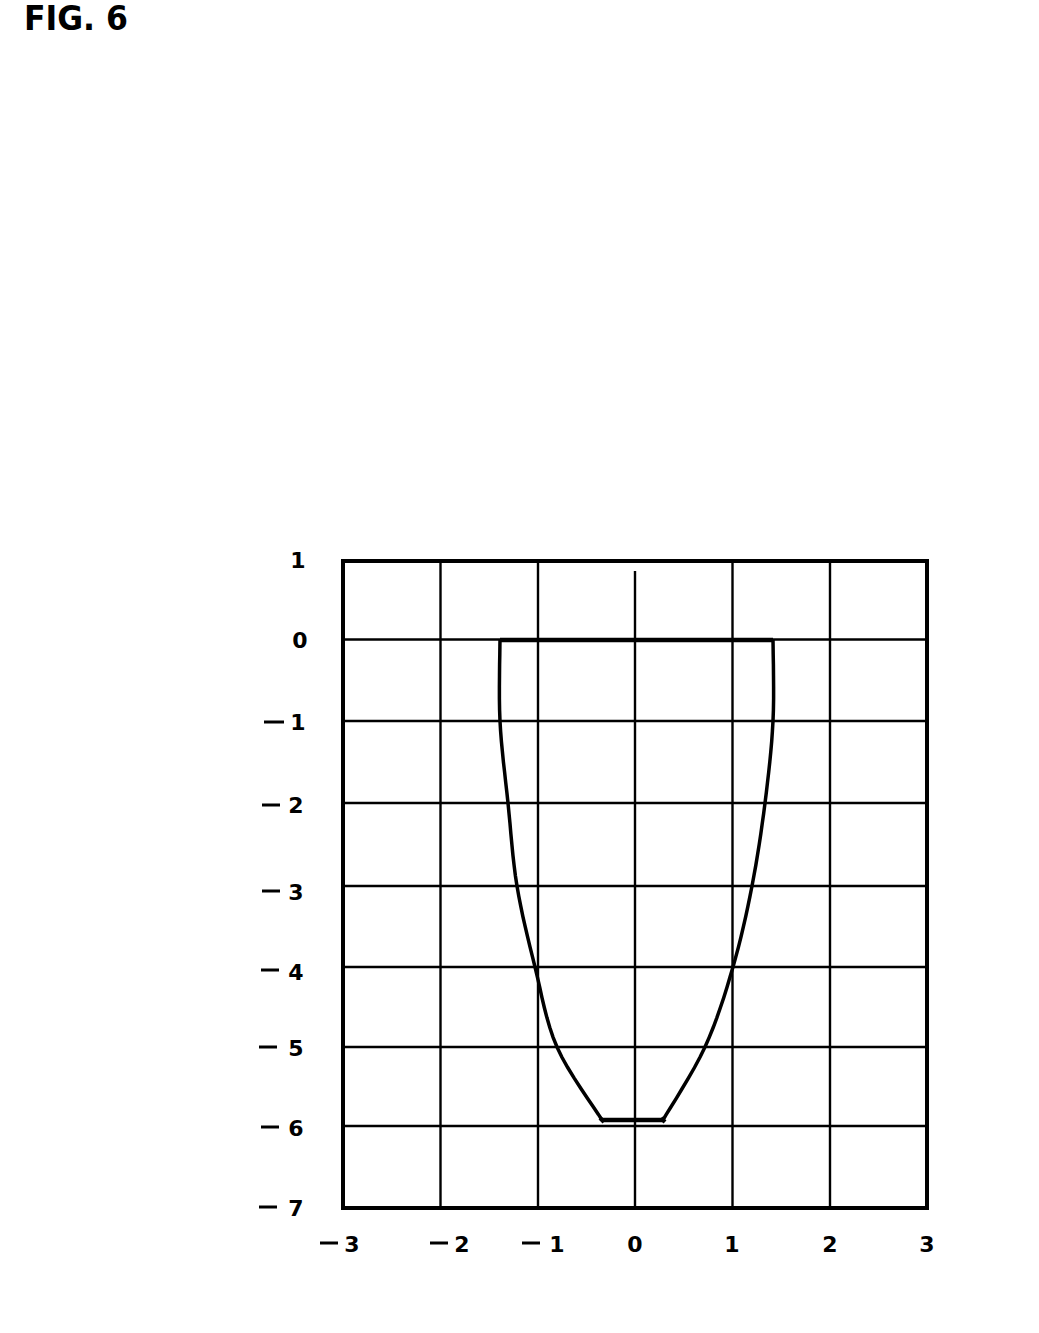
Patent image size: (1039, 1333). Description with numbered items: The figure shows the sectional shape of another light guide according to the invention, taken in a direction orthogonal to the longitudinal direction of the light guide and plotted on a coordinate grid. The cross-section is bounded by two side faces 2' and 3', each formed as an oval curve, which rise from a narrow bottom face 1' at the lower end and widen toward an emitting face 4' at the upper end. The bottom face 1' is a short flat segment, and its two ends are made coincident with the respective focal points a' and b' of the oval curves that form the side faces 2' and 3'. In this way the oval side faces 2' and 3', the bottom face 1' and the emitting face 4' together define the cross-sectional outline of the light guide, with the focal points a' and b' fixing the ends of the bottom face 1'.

The bottom face 1' is at (636, 1089).
The side face 2' is at (531, 880).
The side face 3' is at (733, 880).
The emitting face 4' is at (636, 609).
The focal point a' is at (589, 1153).
The focal point b' is at (675, 1155).